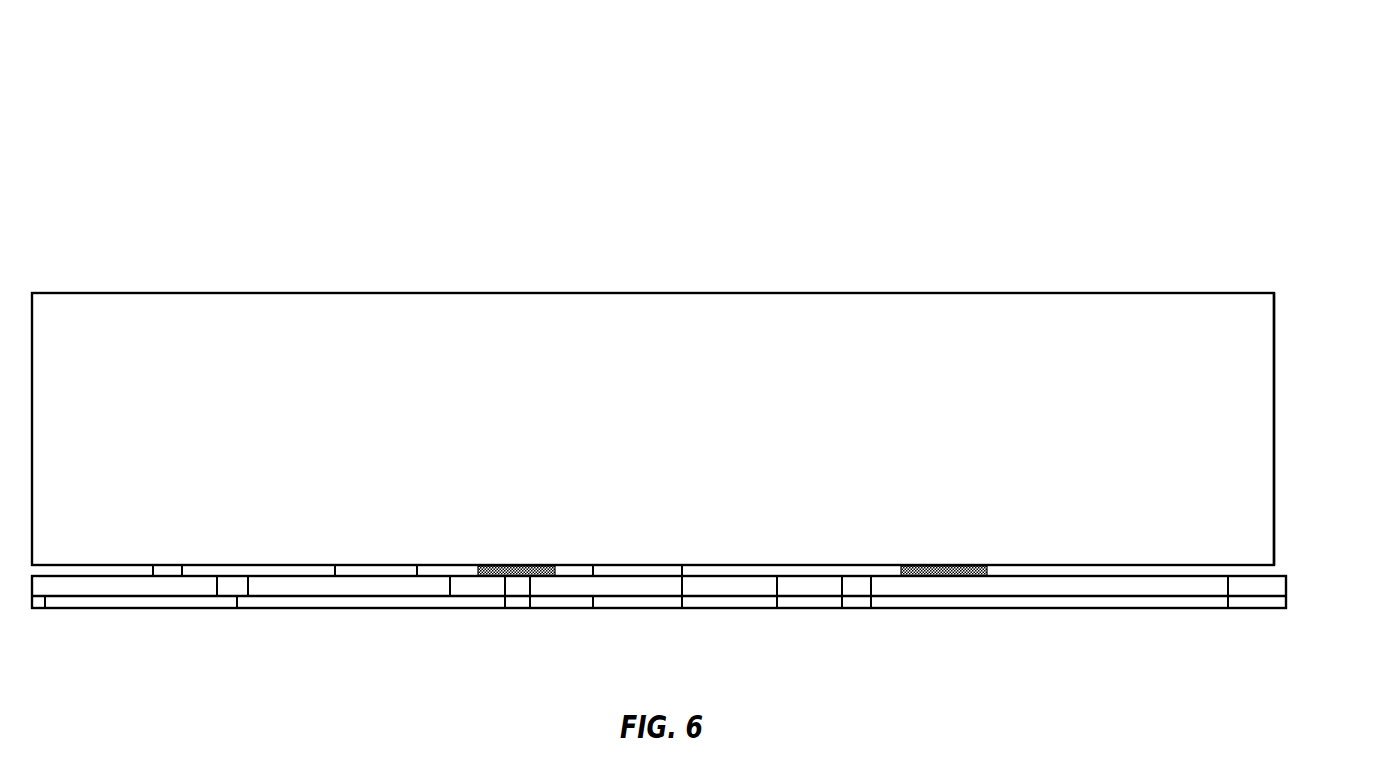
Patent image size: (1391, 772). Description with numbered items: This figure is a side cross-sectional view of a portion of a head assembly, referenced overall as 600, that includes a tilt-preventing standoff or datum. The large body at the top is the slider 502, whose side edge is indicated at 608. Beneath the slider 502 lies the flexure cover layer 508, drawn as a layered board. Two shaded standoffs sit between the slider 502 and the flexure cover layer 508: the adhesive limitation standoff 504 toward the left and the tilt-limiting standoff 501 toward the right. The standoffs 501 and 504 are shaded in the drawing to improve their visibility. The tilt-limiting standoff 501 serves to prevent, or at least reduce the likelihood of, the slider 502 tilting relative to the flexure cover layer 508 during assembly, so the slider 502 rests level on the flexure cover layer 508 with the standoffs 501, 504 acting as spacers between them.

The semiconductor package assembly 600 is at (238, 106).
The slider 502 is at (547, 293).
The side edge of body 608 is at (1262, 502).
The adhesive limitation standoff 504 is at (542, 572).
The tilt-limiting standoff 501 is at (938, 572).
The flexure cover layer 508 is at (1114, 587).